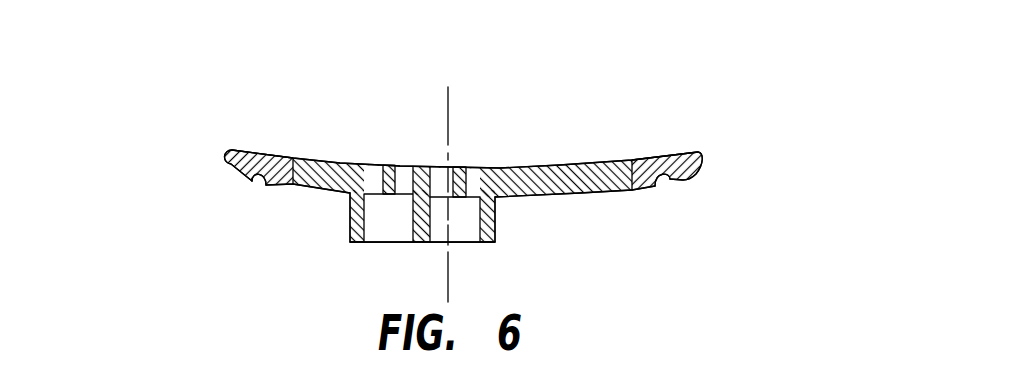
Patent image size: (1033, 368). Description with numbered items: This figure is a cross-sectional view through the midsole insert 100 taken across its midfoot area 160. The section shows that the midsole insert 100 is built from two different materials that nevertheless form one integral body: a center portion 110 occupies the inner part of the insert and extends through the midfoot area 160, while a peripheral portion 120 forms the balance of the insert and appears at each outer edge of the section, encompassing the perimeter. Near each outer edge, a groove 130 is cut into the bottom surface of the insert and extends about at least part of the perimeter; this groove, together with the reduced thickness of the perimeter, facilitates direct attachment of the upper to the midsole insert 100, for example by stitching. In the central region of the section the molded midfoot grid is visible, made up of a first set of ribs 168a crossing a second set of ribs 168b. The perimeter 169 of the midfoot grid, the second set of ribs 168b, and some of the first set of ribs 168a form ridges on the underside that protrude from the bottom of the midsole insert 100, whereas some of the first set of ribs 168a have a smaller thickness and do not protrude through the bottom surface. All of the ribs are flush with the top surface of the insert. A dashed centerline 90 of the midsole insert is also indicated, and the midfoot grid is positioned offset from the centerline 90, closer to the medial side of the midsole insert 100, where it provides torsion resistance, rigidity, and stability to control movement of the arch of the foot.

The midsole insert 100 is at (401, 167).
The midfoot area 160 is at (400, 178).
The center portion 110 is at (545, 197).
The peripheral portion 120 is at (257, 150).
The groove 130 is at (265, 177).
The first set of ribs 168a is at (393, 167).
The second set of ribs 168b is at (392, 232).
The perimeter of the midfoot grid 169 is at (348, 233).
The centerline 90 is at (448, 102).